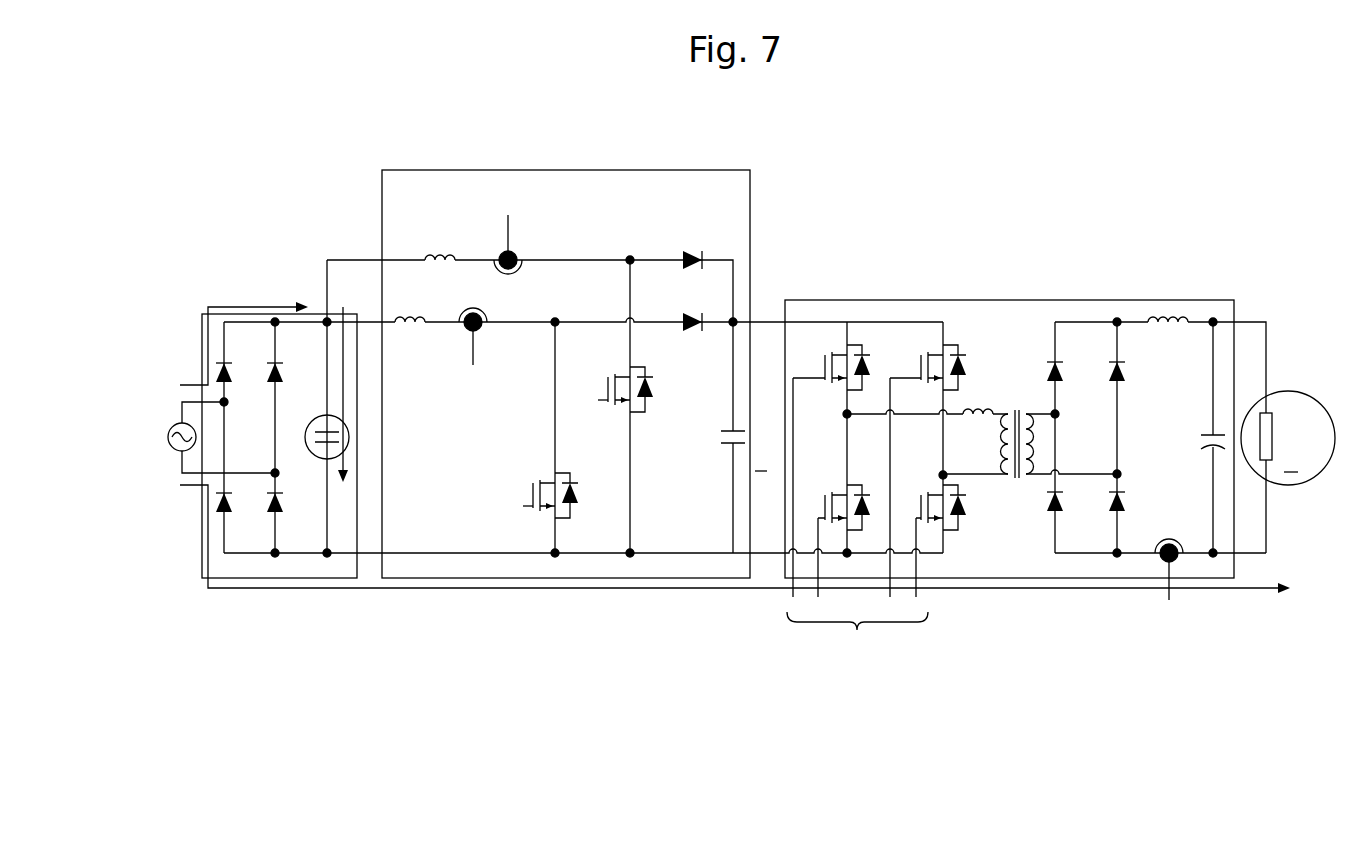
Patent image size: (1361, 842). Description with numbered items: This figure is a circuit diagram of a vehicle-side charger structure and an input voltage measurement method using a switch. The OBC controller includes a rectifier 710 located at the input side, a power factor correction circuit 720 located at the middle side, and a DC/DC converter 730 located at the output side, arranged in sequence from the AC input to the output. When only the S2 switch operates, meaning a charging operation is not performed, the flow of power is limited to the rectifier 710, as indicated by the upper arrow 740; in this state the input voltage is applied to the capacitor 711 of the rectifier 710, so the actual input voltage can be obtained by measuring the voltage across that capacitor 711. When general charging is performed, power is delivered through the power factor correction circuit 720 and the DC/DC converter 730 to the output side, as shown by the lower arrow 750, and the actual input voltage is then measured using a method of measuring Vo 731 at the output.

The upper arrow 740 is at (253, 307).
The rectifier 710 is at (367, 323).
The capacitor 711 is at (314, 456).
The power factor correction circuit 720 is at (708, 170).
The DC/DC converter 730 is at (1195, 300).
The Vo 731 is at (1320, 394).
The lower arrow 750 is at (498, 588).